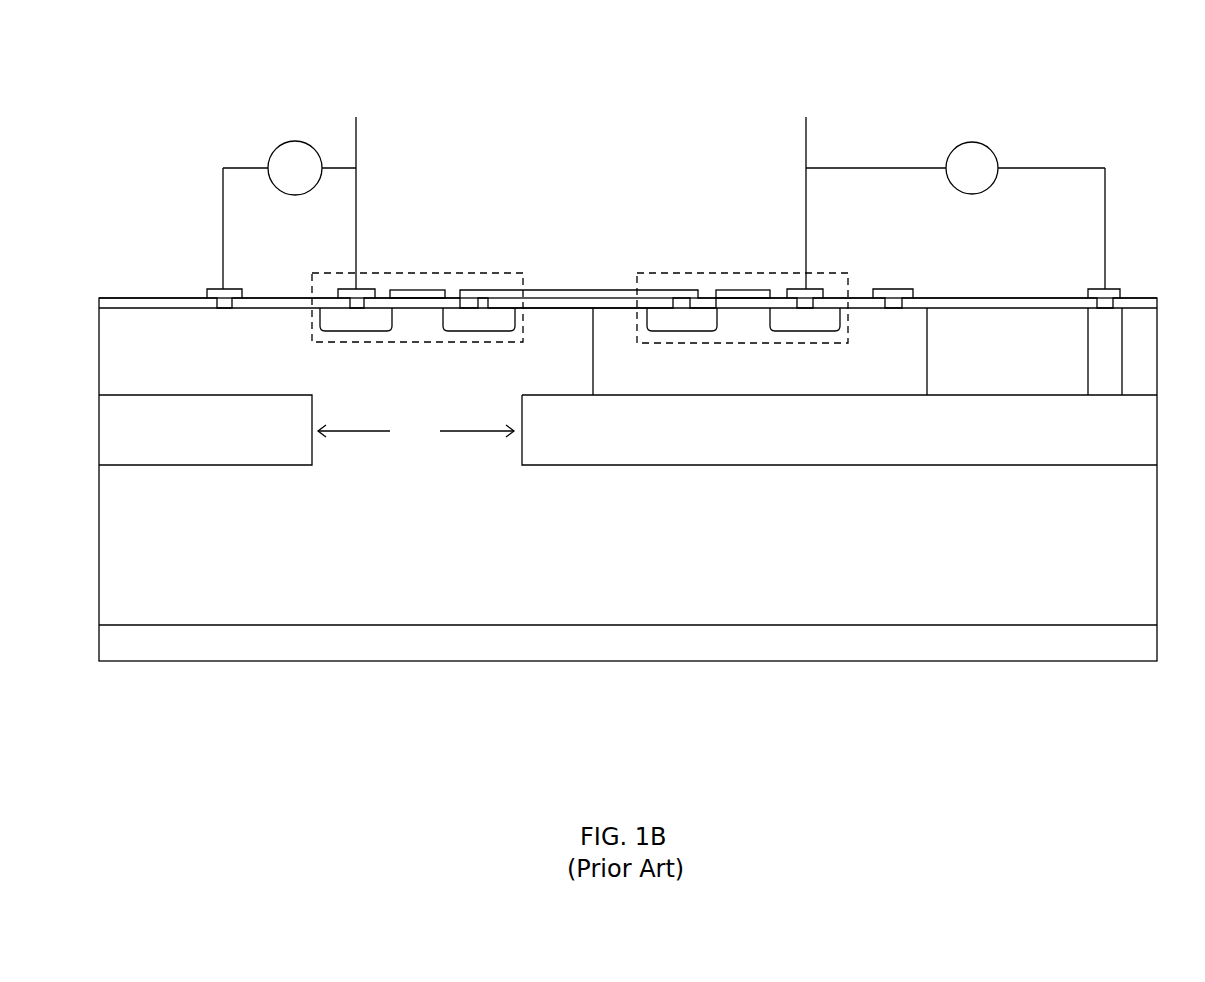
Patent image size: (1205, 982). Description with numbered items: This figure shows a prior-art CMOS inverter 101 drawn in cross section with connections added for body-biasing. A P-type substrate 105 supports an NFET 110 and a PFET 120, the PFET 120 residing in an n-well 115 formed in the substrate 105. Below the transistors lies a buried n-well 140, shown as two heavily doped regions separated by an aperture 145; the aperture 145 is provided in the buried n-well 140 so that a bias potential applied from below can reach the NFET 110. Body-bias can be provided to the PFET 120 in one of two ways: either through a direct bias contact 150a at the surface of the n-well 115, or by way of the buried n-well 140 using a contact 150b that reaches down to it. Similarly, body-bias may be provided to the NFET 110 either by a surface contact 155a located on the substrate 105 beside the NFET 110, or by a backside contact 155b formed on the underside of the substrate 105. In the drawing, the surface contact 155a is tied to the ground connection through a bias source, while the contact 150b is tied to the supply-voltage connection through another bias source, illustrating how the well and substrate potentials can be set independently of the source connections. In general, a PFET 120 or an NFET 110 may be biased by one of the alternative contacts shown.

The CMOS device structure 101 is at (1089, 94).
The P-type substrate 105 is at (646, 583).
The NFET 110 is at (452, 272).
The n-well 115 is at (763, 389).
The PFET 120 is at (698, 272).
The buried n-well 140 is at (163, 441).
The aperture 145 is at (416, 430).
The direct bias contact 150a is at (910, 298).
The contact 150b is at (1092, 289).
The surface contact 155a is at (206, 289).
The backside contact 155b is at (572, 654).